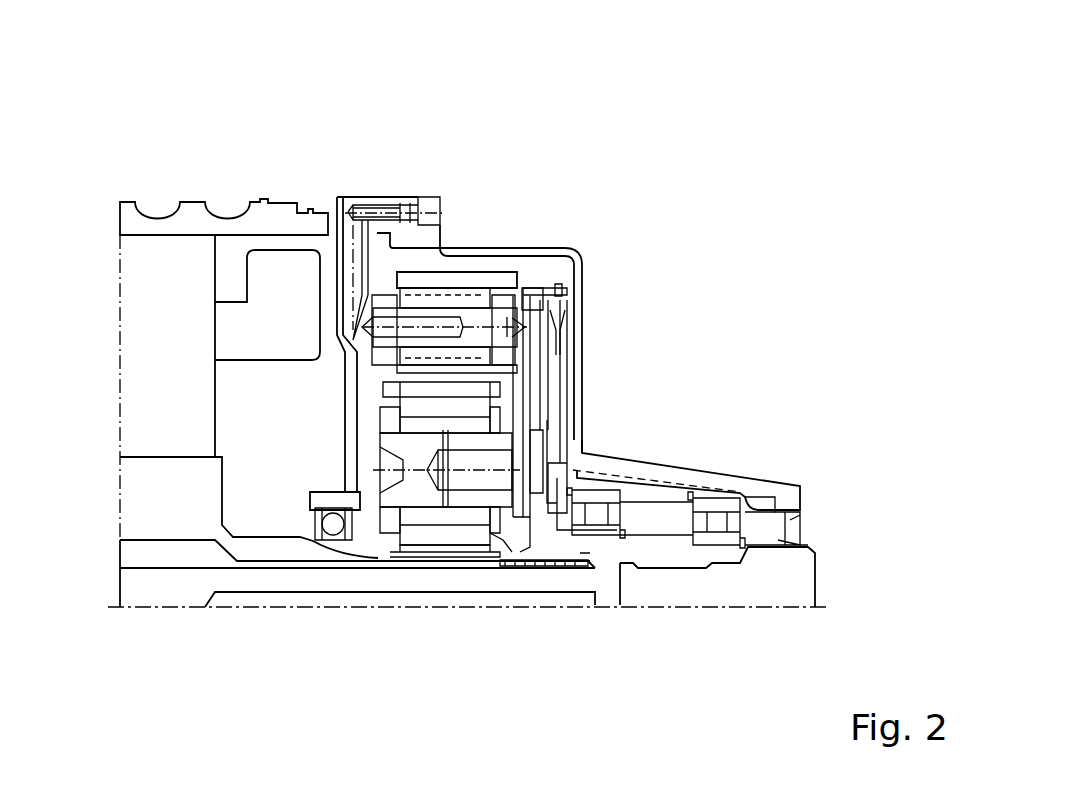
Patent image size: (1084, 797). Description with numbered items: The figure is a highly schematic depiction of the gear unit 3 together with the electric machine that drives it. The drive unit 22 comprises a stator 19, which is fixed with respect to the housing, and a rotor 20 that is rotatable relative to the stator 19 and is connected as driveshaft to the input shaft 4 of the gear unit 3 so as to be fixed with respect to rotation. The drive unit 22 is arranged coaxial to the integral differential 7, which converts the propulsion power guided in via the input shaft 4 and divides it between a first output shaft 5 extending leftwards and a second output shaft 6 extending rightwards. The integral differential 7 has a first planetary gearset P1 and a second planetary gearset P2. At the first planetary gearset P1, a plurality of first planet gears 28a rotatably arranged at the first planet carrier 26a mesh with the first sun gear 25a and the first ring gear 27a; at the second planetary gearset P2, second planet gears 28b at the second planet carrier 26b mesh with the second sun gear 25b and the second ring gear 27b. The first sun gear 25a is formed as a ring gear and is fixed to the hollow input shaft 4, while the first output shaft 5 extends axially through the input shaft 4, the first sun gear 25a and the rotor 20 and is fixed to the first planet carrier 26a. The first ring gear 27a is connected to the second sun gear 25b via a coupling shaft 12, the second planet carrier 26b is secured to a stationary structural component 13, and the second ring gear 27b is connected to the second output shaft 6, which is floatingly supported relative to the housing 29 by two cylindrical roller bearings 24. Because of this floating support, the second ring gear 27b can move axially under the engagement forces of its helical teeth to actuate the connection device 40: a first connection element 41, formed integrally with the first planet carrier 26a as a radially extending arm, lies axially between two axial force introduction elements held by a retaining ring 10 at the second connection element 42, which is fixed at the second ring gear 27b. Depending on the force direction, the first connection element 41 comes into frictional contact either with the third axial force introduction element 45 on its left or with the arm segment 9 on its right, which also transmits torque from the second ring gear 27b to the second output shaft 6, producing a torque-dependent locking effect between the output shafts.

The drive unit 22 is at (167, 198).
The stator 19 is at (155, 307).
The rotor 20 is at (170, 505).
The stationary structural component 13 is at (340, 280).
The second planetary gearset P2 is at (380, 278).
The second planet carrier 26b is at (390, 290).
The second ring gear 27b is at (467, 293).
The integral differential 7 is at (503, 275).
The first connection element 41 is at (555, 273).
The connection device 40 is at (567, 248).
The third axial force introduction element 45 is at (528, 297).
The gear unit 3 is at (577, 187).
The second connection element 42 is at (585, 262).
The retaining ring 10 is at (583, 268).
The arm segment 9 is at (583, 290).
The second planet gears 28b is at (473, 353).
The first ring gear 27a is at (473, 373).
The coupling shaft 12 is at (697, 330).
The second sun gear 25b is at (717, 338).
The first planet carrier 26a is at (533, 397).
The first output shaft 5 is at (234, 585).
The input shaft 4 is at (277, 548).
The first planetary gearset P1 is at (385, 540).
The first planet gears 28a is at (472, 425).
The first sun gear 25a is at (493, 557).
The cylindrical roller bearings 24 is at (602, 542).
The housing 29 is at (663, 473).
The second output shaft 6 is at (797, 553).